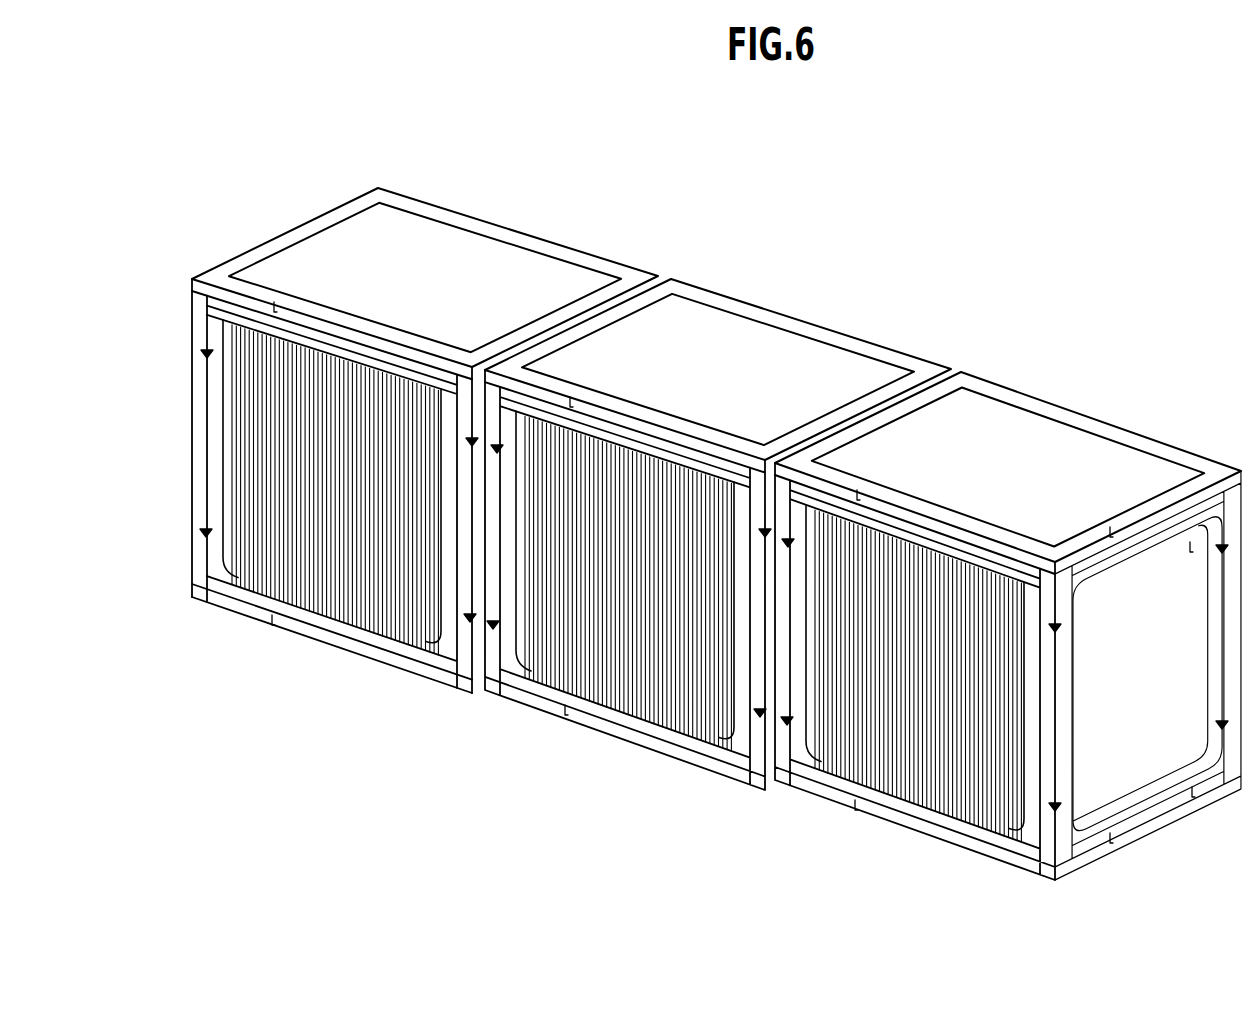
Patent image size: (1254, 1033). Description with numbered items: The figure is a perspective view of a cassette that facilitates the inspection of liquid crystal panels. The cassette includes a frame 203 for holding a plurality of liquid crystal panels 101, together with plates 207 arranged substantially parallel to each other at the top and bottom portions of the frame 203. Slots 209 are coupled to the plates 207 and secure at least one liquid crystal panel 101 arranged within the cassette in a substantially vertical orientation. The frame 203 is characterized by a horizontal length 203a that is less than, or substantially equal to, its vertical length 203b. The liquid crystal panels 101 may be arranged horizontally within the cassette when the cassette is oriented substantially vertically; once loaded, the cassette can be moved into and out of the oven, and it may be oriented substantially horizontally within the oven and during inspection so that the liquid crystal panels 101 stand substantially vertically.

The liquid crystal panel 101 is at (238, 415).
The frame 203 is at (278, 237).
The horizontal length 203a is at (355, 650).
The vertical length 203b is at (192, 488).
The plate 207 is at (513, 270).
The slot 209 is at (200, 308).